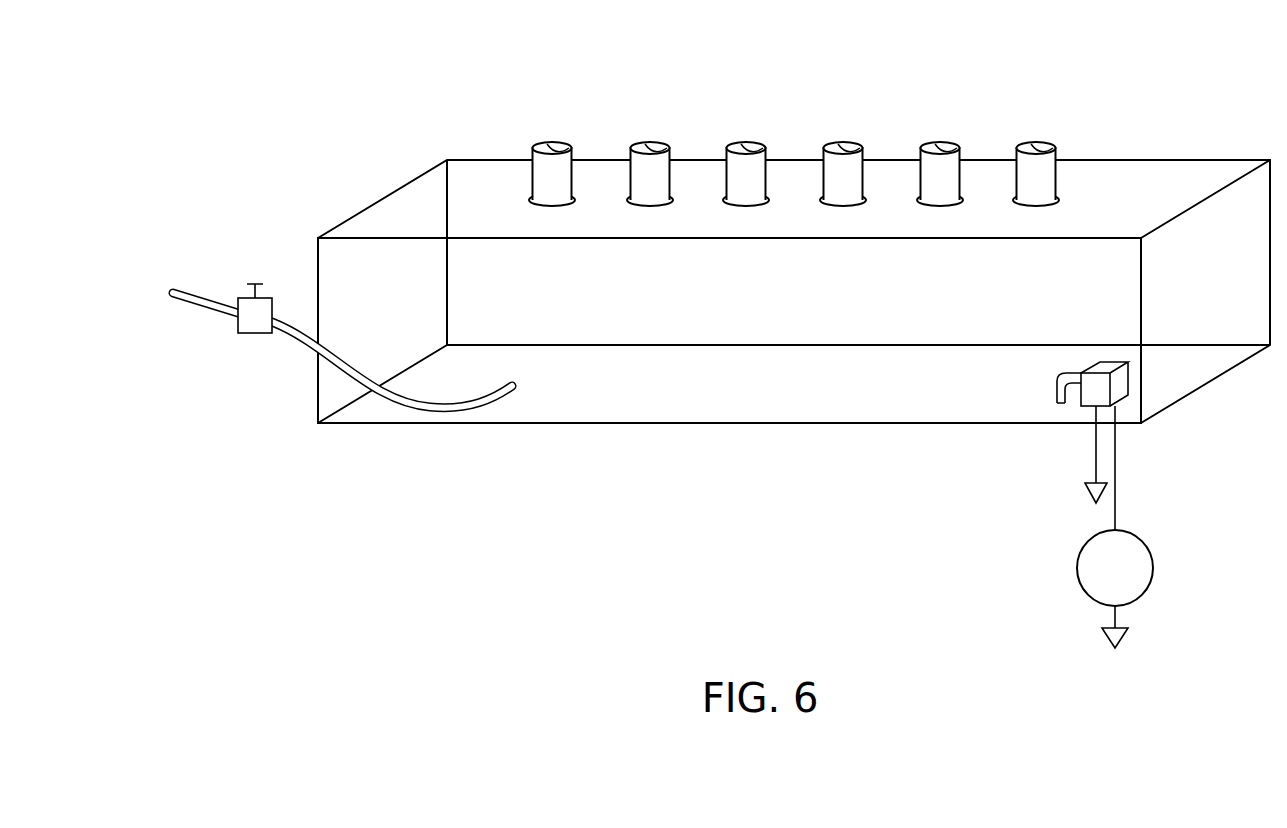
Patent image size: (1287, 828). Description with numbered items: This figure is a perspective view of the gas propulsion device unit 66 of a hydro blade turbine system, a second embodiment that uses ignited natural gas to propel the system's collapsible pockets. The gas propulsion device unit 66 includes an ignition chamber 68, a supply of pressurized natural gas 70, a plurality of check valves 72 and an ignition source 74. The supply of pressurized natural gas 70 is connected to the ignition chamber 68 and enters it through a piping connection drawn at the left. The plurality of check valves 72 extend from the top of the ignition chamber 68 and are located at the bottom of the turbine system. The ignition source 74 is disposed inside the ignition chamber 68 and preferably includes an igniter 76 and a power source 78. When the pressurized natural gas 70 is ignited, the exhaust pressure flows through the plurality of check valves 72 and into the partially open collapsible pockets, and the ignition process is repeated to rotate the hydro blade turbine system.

The gas propulsion device unit 66 is at (968, 118).
The ignition chamber 68 is at (772, 424).
The supply of pressurized natural gas 70 is at (195, 290).
The check valves 72 is at (549, 143).
The ignition source 74 is at (1128, 472).
The igniter 76 is at (1093, 392).
The power source 78 is at (1152, 553).